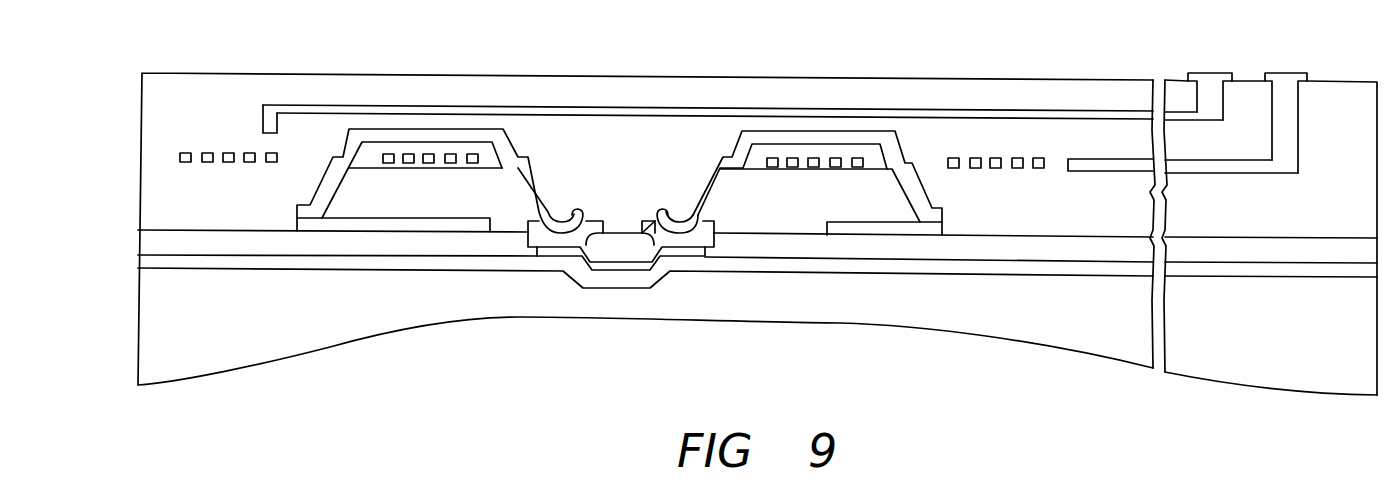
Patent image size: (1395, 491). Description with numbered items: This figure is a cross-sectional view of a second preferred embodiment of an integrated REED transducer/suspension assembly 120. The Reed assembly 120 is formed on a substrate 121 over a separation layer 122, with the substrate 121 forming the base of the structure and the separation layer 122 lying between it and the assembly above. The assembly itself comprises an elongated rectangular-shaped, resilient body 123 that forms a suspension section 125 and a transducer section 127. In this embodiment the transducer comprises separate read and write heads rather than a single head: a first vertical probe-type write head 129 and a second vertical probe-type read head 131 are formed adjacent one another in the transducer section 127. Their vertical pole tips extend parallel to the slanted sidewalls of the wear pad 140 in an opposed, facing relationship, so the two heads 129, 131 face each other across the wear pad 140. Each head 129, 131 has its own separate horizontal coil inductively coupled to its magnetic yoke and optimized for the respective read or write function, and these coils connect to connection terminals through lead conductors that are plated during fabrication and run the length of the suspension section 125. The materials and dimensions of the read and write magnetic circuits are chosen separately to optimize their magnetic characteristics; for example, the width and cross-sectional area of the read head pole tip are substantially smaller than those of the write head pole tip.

The integrated REED transducer/suspension assembly 120 is at (893, 69).
The substrate 121 is at (1103, 333).
The separation layer 122 is at (908, 265).
The resilient body 123 is at (1337, 79).
The suspension section 125 is at (1057, 79).
The transducer section 127 is at (577, 76).
The first vertical probe-type write head 129 is at (760, 158).
The second vertical probe-type read head 131 is at (368, 178).
The wear pad 140 is at (657, 290).